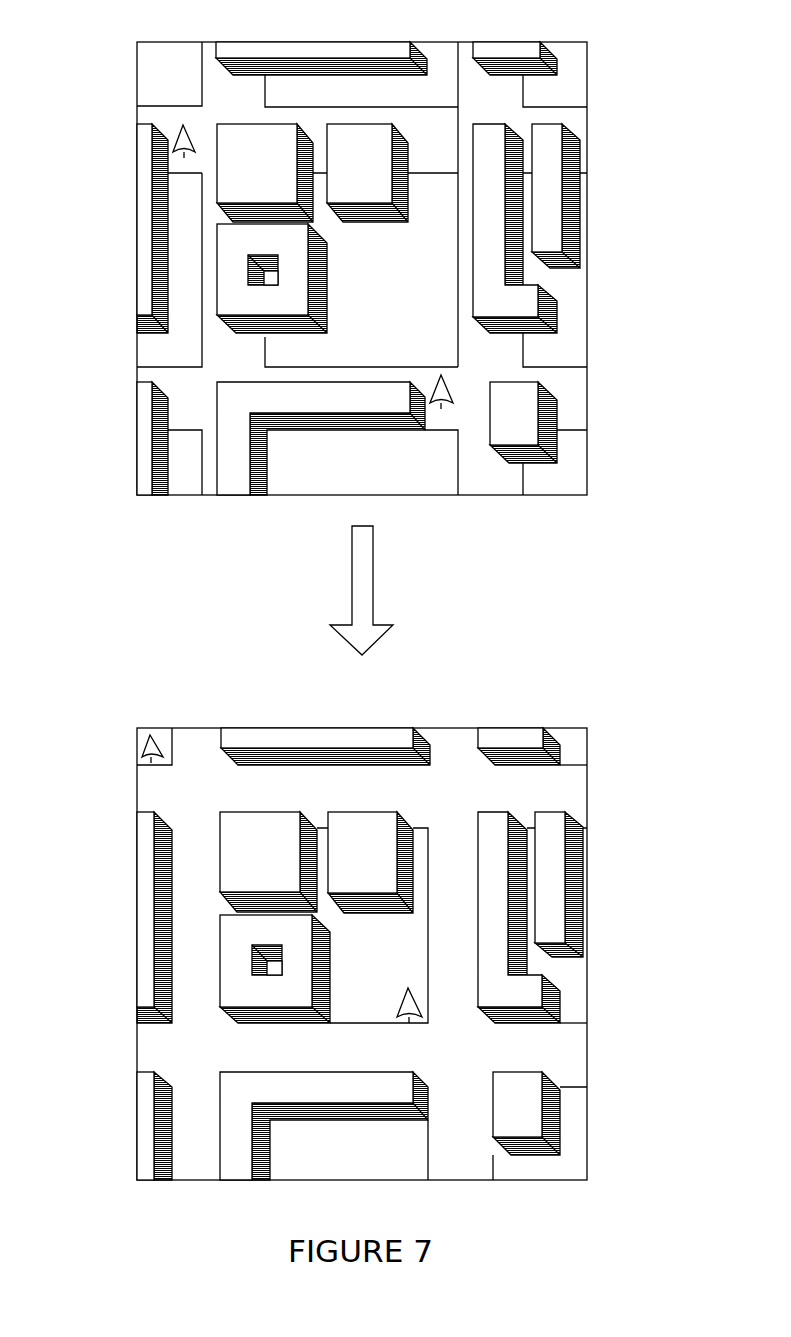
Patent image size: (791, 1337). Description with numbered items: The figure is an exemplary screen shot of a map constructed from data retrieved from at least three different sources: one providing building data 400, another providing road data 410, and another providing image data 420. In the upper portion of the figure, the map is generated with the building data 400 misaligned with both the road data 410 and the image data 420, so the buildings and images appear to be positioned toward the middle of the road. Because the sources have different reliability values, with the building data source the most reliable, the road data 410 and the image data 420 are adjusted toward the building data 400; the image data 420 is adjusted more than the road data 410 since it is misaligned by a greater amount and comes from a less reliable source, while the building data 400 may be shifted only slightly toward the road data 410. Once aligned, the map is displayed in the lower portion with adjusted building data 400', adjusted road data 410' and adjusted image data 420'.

The building data 400 is at (209, 116).
The image data 420 is at (126, 192).
The road data 410 is at (600, 392).
The adjusted building data 400' is at (194, 832).
The adjusted image data 420' is at (98, 707).
The adjusted road data 410' is at (602, 1069).